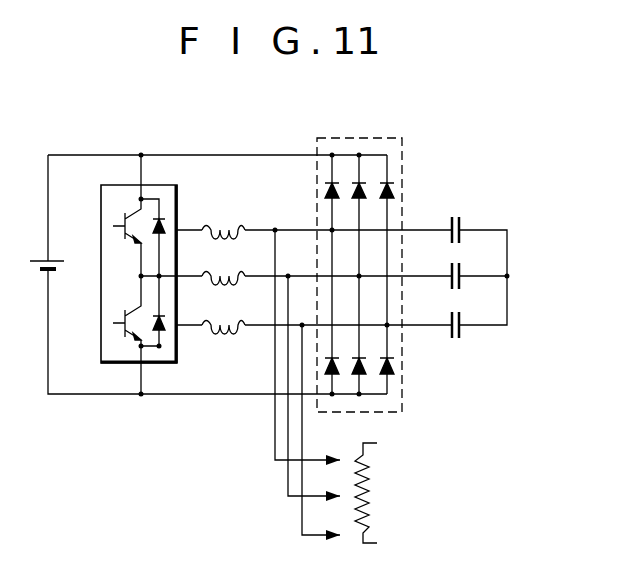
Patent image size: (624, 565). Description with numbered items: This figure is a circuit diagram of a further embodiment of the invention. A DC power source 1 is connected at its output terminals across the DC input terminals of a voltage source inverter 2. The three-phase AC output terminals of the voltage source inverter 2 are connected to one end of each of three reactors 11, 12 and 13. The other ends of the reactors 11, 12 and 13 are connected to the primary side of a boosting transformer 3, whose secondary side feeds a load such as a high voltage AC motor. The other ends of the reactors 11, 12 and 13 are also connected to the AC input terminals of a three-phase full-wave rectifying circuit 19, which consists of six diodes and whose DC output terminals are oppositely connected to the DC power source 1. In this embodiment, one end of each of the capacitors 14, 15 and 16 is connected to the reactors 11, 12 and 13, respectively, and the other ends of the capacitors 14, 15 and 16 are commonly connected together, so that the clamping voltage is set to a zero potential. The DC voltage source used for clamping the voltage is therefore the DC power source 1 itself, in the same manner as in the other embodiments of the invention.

The DC power source 1 is at (37, 257).
The voltage source inverter 2 is at (160, 185).
The boosting transformer 3 is at (372, 476).
The reactor 11 is at (226, 218).
The reactor 12 is at (226, 272).
The reactor 13 is at (226, 320).
The capacitor 14 is at (455, 215).
The capacitor 15 is at (462, 259).
The capacitor 16 is at (460, 310).
The three-phase full-wave rectifying circuit 19 is at (362, 138).